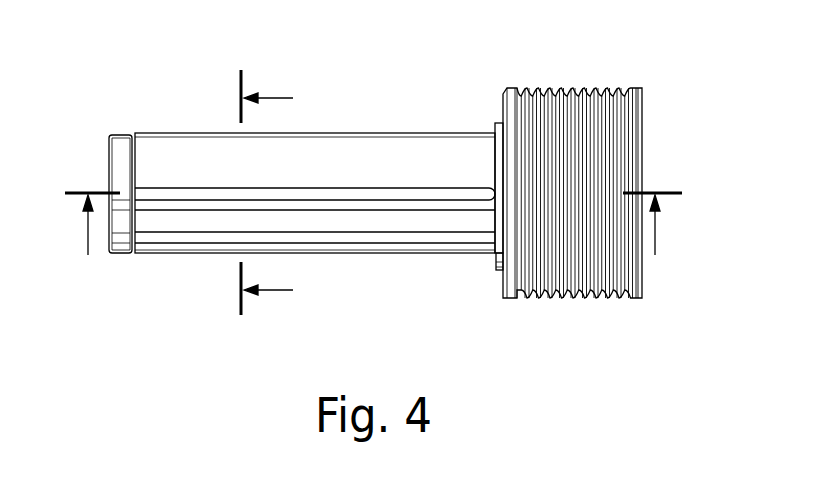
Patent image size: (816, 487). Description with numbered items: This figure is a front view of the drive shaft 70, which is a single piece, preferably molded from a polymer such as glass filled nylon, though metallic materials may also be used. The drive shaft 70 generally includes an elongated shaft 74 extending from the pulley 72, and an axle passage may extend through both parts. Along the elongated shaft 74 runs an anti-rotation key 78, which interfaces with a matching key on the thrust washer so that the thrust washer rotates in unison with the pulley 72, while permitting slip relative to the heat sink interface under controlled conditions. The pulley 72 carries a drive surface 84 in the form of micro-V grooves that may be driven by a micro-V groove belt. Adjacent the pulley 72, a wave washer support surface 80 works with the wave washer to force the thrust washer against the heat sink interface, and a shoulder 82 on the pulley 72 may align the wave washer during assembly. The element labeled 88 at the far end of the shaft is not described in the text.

The drive shaft 70 is at (485, 375).
The pulley 72 is at (575, 120).
The elongated shaft 74 is at (357, 132).
The anti-rotation key 78 is at (383, 190).
The wave washer support surface 80 is at (503, 280).
The shoulder 82 is at (498, 125).
The drive surface 84 is at (568, 298).
The end cap 88 is at (130, 147).